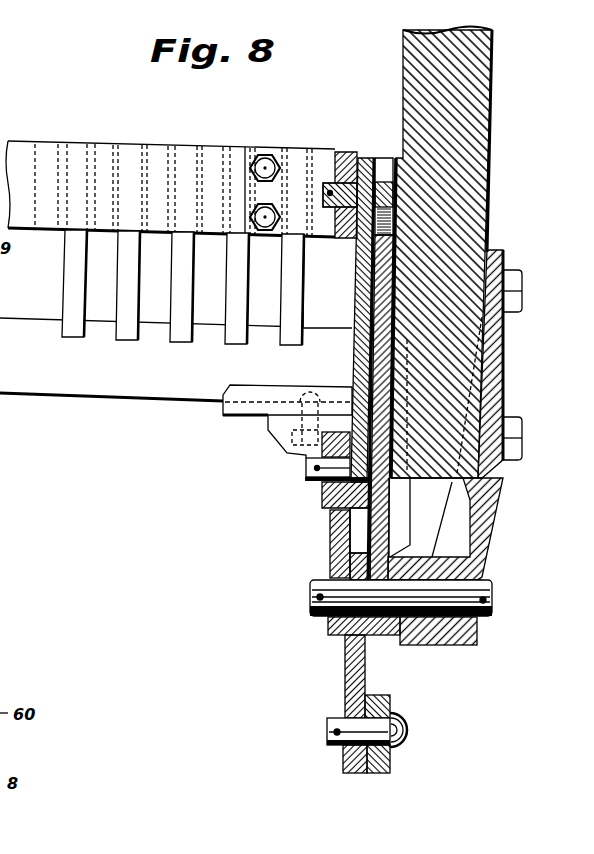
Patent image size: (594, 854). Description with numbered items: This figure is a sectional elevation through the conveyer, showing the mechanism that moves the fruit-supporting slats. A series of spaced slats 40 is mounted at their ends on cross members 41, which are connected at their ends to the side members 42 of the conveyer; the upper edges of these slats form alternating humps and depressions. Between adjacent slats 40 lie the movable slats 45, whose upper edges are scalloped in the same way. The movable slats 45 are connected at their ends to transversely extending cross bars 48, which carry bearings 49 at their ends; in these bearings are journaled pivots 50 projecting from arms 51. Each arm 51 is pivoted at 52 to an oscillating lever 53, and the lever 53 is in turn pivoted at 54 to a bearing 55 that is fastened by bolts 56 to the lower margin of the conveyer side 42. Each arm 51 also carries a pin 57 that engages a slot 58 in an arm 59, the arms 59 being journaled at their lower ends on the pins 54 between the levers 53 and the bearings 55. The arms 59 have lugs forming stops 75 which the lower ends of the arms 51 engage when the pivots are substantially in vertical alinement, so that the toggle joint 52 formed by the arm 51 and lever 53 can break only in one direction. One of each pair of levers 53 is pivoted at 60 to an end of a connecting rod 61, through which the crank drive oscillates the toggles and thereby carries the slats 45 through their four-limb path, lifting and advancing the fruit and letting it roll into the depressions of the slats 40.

The slats 40 is at (183, 337).
The cross members 41 is at (112, 380).
The side members 42 is at (483, 90).
The movable slats 45 is at (108, 152).
The cross bars 48 is at (128, 155).
The bearings 49 is at (342, 153).
The pivots 50 is at (333, 190).
The arms 51 is at (355, 349).
The pivot 52 is at (315, 470).
The oscillating levers 53 is at (333, 533).
The pivot pins 54 is at (492, 598).
The bearings 55 is at (482, 563).
The bolts 56 is at (520, 290).
The pin 57 is at (403, 192).
The slot 58 is at (387, 222).
The arms 59 is at (397, 313).
The pivot 60 is at (342, 718).
The connecting rod 61 is at (392, 702).
The stops 75 is at (322, 503).